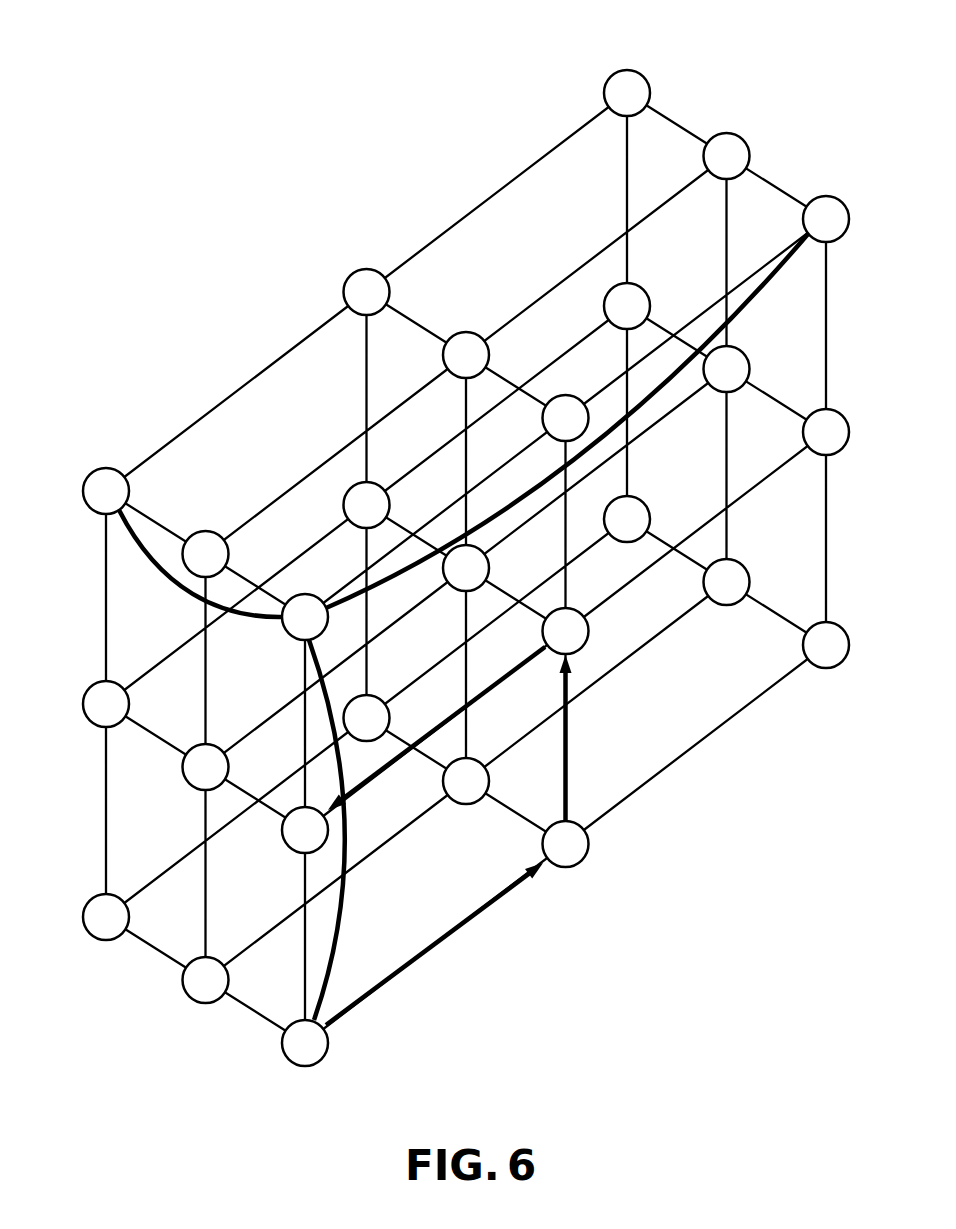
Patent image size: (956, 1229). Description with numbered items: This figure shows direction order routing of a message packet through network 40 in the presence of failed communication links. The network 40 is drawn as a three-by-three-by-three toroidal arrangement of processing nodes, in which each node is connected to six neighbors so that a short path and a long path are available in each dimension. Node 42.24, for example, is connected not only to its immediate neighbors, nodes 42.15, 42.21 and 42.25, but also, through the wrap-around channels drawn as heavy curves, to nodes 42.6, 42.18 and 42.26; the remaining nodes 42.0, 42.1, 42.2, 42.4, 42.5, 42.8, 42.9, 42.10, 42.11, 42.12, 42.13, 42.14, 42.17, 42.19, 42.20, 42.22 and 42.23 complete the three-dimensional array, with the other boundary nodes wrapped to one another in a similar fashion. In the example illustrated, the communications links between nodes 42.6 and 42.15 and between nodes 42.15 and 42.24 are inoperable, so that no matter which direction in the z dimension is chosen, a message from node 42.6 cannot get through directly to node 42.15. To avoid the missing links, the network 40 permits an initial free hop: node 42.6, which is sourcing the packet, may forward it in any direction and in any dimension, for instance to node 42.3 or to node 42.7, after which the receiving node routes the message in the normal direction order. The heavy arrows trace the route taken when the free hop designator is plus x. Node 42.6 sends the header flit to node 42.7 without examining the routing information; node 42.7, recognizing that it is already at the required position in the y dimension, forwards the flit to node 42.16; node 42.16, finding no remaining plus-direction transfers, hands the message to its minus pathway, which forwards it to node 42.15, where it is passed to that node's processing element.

The network 40 is at (296, 152).
The processing node 42.0 is at (90, 937).
The processing node 42.1 is at (375, 697).
The processing node 42.2 is at (633, 499).
The node 42.3 is at (188, 995).
The processing node 42.4 is at (478, 760).
The processing node 42.5 is at (738, 562).
The node 42.6 is at (290, 1060).
The node 42.7 is at (578, 822).
The processing node 42.8 is at (836, 623).
The processing node 42.9 is at (92, 722).
The processing node 42.10 is at (378, 483).
The processing node 42.11 is at (637, 285).
The processing node 42.12 is at (192, 785).
The processing node 42.13 is at (489, 566).
The processing node 42.14 is at (740, 352).
The node 42.15 is at (290, 849).
The node 42.16 is at (589, 625).
The processing node 42.17 is at (835, 410).
The node 42.18 is at (108, 469).
The processing node 42.19 is at (376, 270).
The processing node 42.20 is at (636, 71).
The node 42.21 is at (207, 531).
The processing node 42.22 is at (476, 333).
The processing node 42.23 is at (738, 134).
The node 42.24 is at (313, 594).
The node 42.25 is at (571, 395).
The node 42.26 is at (834, 197).